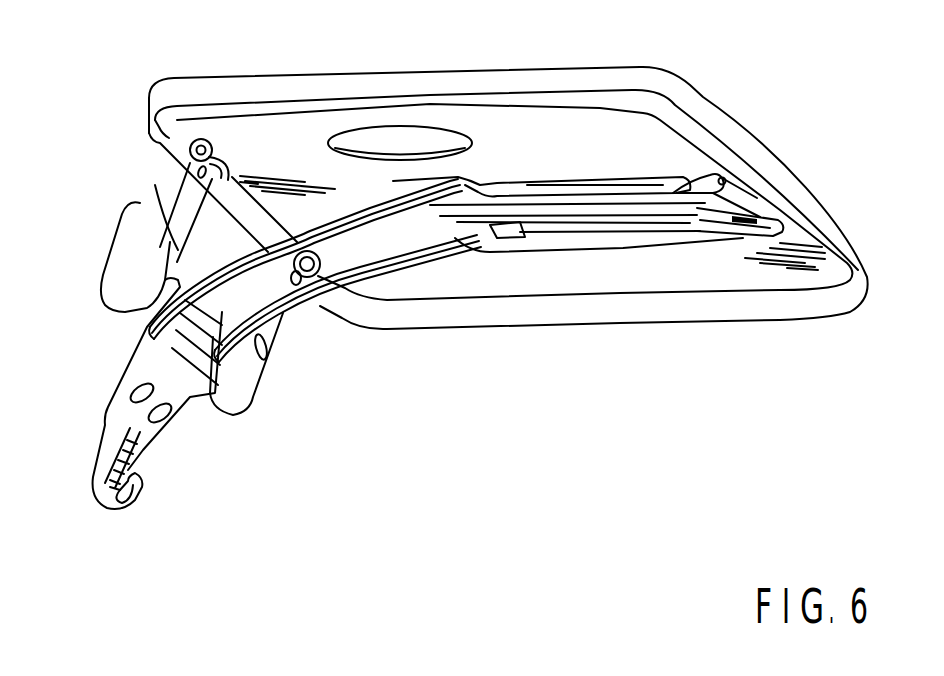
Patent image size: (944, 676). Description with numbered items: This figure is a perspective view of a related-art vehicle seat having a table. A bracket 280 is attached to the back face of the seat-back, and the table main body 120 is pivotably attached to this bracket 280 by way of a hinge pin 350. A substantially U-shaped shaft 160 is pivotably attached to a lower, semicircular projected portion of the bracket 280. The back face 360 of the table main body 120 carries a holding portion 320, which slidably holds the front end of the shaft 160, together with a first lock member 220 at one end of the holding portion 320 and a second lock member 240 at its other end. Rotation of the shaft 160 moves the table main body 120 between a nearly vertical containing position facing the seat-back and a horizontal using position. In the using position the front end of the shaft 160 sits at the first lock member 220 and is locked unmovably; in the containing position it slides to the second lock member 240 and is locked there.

The table main body 120 is at (703, 97).
The shaft 160 is at (355, 213).
The first lock member 220 is at (505, 237).
The second lock member 240 is at (721, 236).
The bracket 280 is at (140, 263).
The holding portion 320 is at (633, 205).
The hinge pin 350 is at (190, 151).
The back face 360 is at (609, 155).